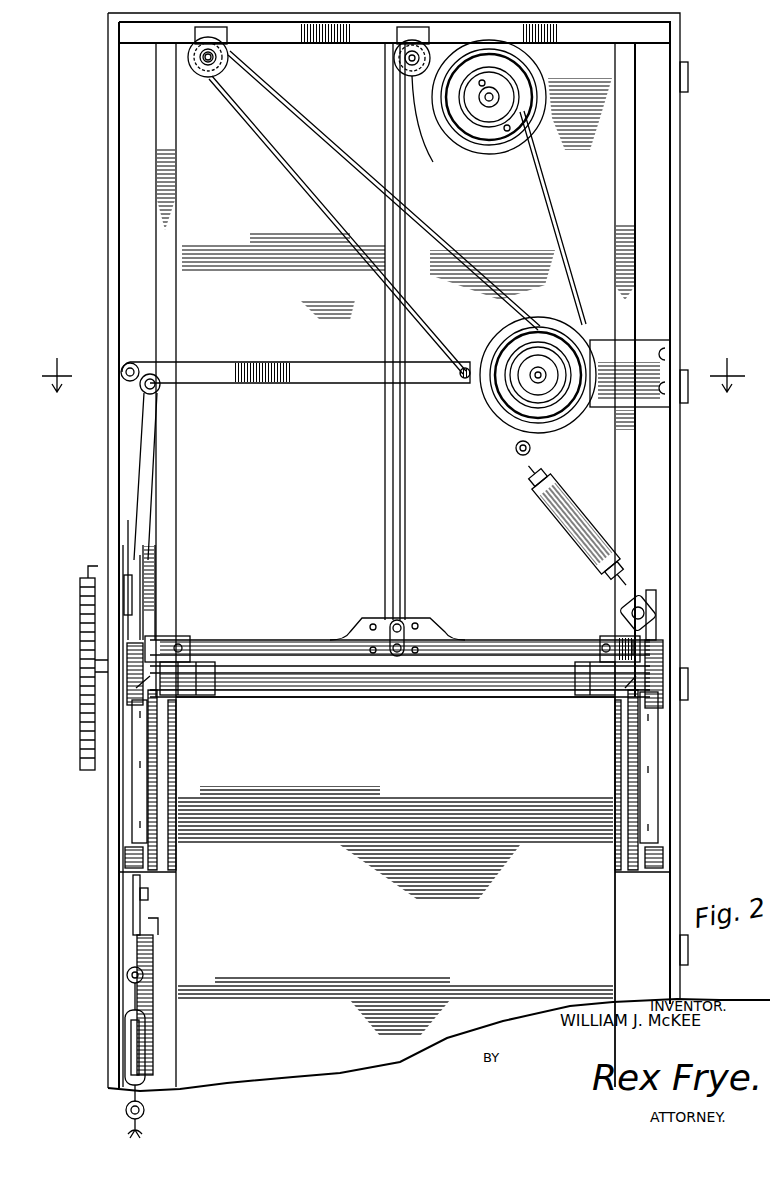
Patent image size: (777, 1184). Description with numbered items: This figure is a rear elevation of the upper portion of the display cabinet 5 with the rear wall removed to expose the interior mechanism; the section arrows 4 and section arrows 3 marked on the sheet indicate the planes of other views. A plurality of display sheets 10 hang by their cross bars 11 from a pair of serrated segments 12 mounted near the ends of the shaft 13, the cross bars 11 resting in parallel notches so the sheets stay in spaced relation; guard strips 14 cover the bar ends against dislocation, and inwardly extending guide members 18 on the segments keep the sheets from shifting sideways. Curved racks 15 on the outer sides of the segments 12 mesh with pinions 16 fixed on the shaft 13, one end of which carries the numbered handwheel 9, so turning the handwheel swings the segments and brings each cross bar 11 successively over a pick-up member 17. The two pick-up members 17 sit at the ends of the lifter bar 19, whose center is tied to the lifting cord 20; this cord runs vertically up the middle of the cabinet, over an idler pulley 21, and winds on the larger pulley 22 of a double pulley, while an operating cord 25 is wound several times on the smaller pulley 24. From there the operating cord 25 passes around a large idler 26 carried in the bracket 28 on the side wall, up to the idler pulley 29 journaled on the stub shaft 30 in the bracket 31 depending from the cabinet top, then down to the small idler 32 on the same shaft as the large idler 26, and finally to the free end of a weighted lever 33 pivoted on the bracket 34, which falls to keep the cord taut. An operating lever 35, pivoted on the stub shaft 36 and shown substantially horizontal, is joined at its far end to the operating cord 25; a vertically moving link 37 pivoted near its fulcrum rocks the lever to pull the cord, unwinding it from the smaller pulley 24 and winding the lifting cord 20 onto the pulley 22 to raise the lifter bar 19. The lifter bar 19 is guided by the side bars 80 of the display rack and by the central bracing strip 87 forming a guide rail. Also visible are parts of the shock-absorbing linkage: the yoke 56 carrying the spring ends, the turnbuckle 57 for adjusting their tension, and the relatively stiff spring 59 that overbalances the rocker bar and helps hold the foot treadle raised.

The section line / link 3 is at (134, 476).
The section line 4- 4 is at (390, 375).
The cabinet 5 is at (108, 470).
The handwheel 9 is at (80, 625).
The display sheets 10 is at (330, 1082).
The cross bars 11 is at (626, 694).
The serrated segments 12 is at (632, 876).
The shaft 13 is at (525, 682).
The guard strips 14 is at (660, 750).
The curved racks 15 is at (660, 852).
The pinions 16 is at (648, 706).
The pick-up member 17 is at (178, 638).
The guide members 18 is at (620, 800).
The lifter bar 19 is at (246, 640).
The lifting cord 20 is at (407, 578).
The idler pulley 21 is at (418, 80).
The larger pulley 22 is at (548, 72).
The smaller pulley 24 is at (486, 122).
The operating cord 25 is at (425, 313).
The large idler 26 is at (536, 320).
The bracket 28 is at (640, 355).
The idler pulley 29 is at (213, 74).
The stub shaft 30 is at (215, 55).
The bracket 31 is at (212, 27).
The small idler 32 is at (515, 393).
The weighted lever 33 is at (568, 492).
The bracket 34 is at (640, 592).
The operating lever 35 is at (280, 362).
The stub shaft 36 is at (130, 362).
The link 37 is at (150, 442).
The yoke 56 is at (127, 1118).
The turnbuckle 57 is at (125, 1045).
The spring 59 is at (152, 1000).
The side bars 80 is at (636, 176).
The bracing strip 87 is at (385, 542).